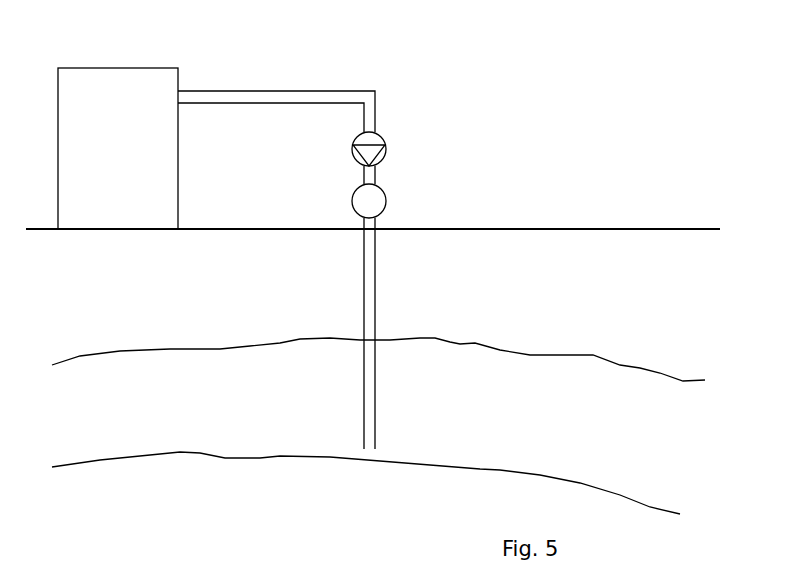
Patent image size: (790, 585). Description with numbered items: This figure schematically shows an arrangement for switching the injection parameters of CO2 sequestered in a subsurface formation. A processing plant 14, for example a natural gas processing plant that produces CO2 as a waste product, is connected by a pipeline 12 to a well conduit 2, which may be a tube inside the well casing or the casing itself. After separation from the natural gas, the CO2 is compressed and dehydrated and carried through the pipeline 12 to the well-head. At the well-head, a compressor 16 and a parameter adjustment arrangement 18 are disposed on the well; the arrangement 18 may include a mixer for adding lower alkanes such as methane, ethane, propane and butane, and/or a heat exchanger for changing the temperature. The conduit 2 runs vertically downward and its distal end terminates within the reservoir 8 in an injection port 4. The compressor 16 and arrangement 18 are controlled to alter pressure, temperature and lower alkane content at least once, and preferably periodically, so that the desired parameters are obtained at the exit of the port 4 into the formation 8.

The processing plant 14 is at (133, 68).
The pipeline 12 is at (228, 91).
The compressor 16 is at (386, 146).
The parameter adjustment arrangement 18 is at (386, 200).
The conduit 2 is at (377, 271).
The injection port 4 is at (377, 448).
The reservoir 8 is at (589, 423).